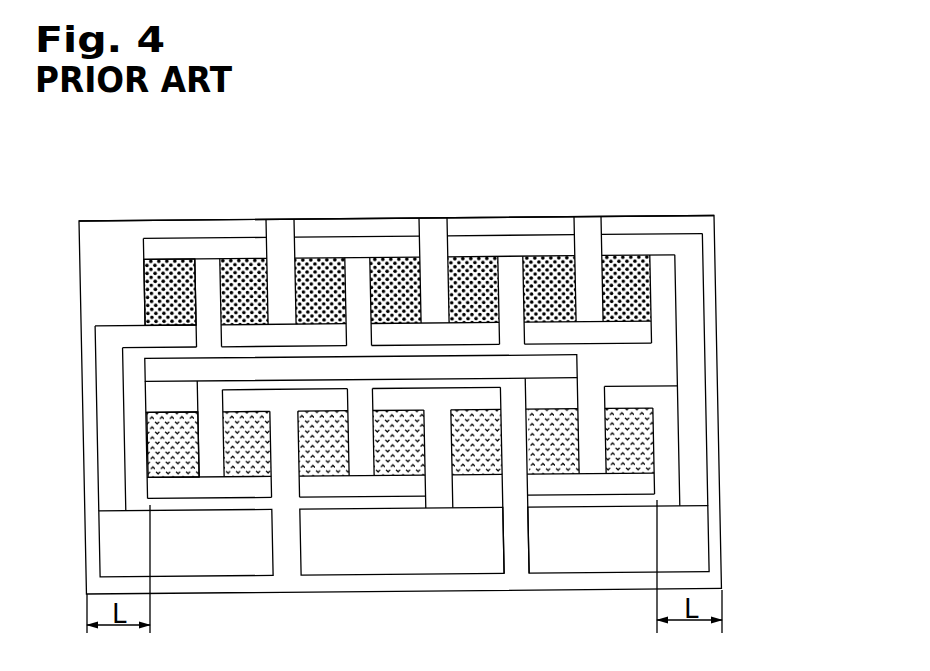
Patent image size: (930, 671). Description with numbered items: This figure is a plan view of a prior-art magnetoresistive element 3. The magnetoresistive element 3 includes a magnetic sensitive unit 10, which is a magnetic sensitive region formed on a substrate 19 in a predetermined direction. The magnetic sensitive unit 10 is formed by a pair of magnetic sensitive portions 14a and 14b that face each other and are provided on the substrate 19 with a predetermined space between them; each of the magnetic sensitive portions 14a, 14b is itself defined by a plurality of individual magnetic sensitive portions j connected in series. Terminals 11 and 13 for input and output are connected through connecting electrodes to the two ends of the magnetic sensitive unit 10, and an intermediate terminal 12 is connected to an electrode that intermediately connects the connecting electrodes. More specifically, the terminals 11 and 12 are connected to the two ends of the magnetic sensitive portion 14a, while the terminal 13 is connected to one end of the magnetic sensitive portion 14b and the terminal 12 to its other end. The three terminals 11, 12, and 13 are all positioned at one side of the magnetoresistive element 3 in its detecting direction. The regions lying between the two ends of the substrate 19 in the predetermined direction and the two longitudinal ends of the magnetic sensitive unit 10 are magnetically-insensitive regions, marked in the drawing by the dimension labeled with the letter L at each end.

The magnetoresistive element 3 is at (113, 202).
The substrate 19 is at (673, 225).
The magnetic sensitive portion 14a is at (658, 299).
The magnetic sensitive portion 14b is at (660, 455).
The magnetic sensitive unit 10 is at (800, 280).
The magnetic sensitive portion j is at (150, 305).
The terminal 11 is at (238, 563).
The intermediate terminal 12 is at (585, 560).
The terminal 13 is at (412, 560).